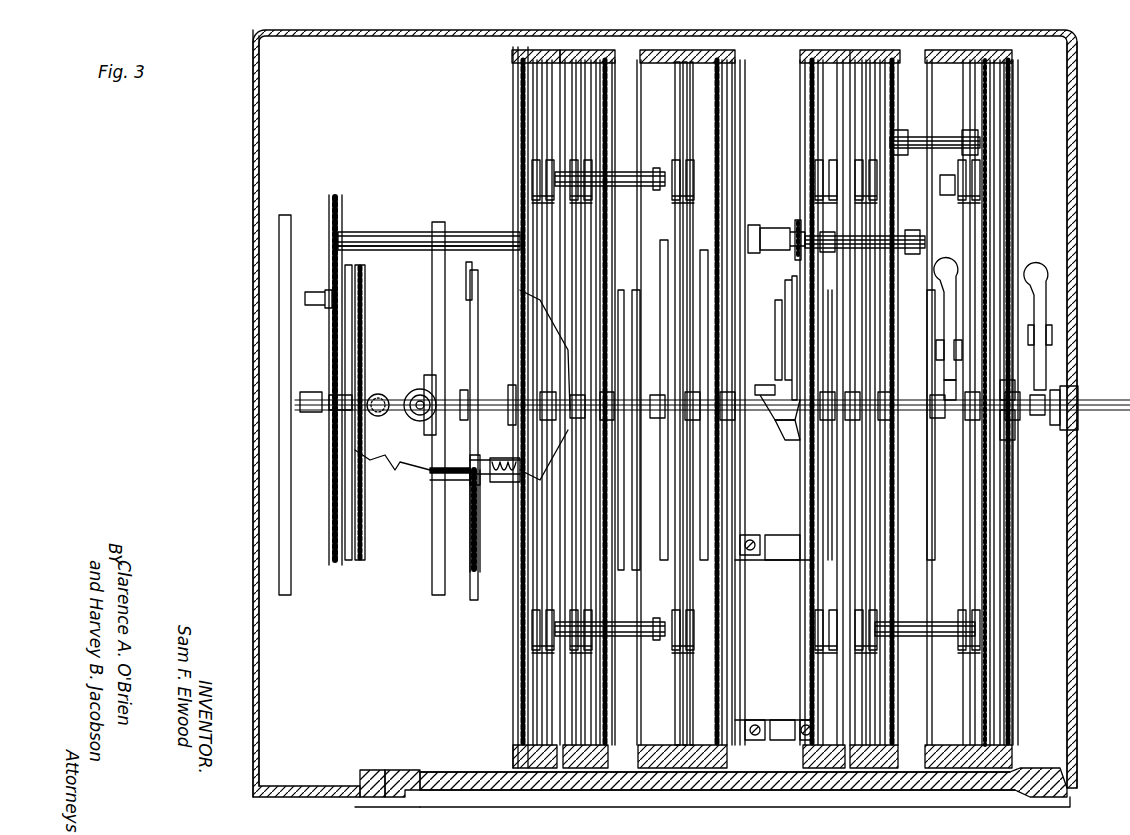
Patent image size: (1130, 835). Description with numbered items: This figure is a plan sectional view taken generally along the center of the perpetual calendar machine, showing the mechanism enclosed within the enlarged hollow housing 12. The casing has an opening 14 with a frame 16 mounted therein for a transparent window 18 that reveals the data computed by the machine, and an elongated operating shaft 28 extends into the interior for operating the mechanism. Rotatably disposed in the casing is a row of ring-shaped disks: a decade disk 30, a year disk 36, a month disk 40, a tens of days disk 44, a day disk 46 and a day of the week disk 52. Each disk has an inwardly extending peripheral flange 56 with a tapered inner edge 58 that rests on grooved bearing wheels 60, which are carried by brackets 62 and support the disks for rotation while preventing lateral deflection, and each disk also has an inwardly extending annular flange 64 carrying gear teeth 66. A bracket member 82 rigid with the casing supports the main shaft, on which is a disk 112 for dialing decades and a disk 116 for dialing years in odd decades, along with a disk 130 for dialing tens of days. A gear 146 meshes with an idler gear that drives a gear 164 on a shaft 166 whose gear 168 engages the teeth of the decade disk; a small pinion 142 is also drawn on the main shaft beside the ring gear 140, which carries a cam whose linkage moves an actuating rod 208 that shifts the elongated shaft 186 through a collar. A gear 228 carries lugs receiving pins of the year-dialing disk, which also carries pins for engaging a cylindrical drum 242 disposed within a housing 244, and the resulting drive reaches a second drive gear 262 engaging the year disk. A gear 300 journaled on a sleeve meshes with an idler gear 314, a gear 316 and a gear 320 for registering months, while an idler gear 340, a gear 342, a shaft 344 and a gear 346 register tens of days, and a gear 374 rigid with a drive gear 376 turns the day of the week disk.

The housing 12 is at (253, 226).
The opening 14 is at (378, 768).
The frame 16 is at (395, 768).
The transparent window 18 is at (915, 770).
The operating shaft 28 is at (1105, 410).
The decade disk 30 is at (512, 52).
The year disk 36 is at (598, 60).
The month disk 40 is at (728, 62).
The tens of days disk 44 is at (796, 60).
The day disk 46 is at (880, 62).
The day of the week disk 52 is at (1012, 50).
The peripheral flange 56 is at (670, 70).
The tapered inner edge 58 is at (678, 123).
The bearing wheels 60 is at (672, 192).
The brackets 62 is at (620, 178).
The annular flange 64 is at (752, 72).
The gear teeth 66 is at (738, 132).
The bracket member 82 is at (284, 215).
The disk 112 is at (366, 297).
The disk 116 is at (472, 350).
The disk 130 is at (932, 535).
The ring gear 140 is at (368, 324).
The pinion 142 is at (372, 388).
The gear 146 is at (336, 468).
The gear 164 is at (332, 222).
The shaft 166 is at (372, 232).
The gear 168 is at (512, 212).
The elongated shaft 186 is at (492, 400).
The actuating rod 208 is at (465, 480).
The gear 228 is at (430, 292).
The cylindrical member 242 is at (470, 298).
The housing 244 is at (484, 540).
The second drive gear 262 is at (596, 232).
The gear 300 is at (812, 470).
The idler gear 314 is at (790, 360).
The gear 316 is at (778, 226).
The gear 320 is at (738, 208).
The idler gear 340 is at (932, 276).
The gear 342 is at (918, 232).
The shaft 344 is at (828, 262).
The gear 346 is at (798, 256).
The gear 374 is at (1012, 440).
The drive gear 376 is at (1002, 466).